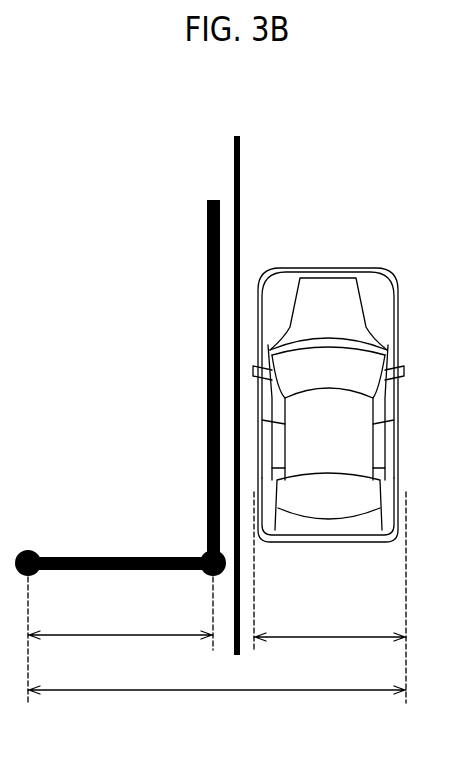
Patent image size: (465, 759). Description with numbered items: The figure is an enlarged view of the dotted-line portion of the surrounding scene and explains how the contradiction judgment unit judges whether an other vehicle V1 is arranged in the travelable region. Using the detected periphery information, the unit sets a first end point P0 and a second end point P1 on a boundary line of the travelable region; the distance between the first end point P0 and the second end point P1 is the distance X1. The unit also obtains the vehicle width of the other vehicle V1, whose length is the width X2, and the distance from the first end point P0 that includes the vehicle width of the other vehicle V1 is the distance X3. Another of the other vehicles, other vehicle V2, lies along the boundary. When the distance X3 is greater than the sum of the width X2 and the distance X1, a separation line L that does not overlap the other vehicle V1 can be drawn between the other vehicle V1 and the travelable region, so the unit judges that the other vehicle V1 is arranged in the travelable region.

The separation line L is at (240, 153).
The other vehicle V1 is at (385, 413).
The other vehicle V2 is at (110, 385).
The first end point P0 is at (30, 548).
The second end point P1 is at (202, 551).
The distance from first end point to second end point X1 is at (120, 624).
The vehicle width of other vehicle X2 is at (330, 625).
The distance from end point including vehicle width X3 is at (217, 680).